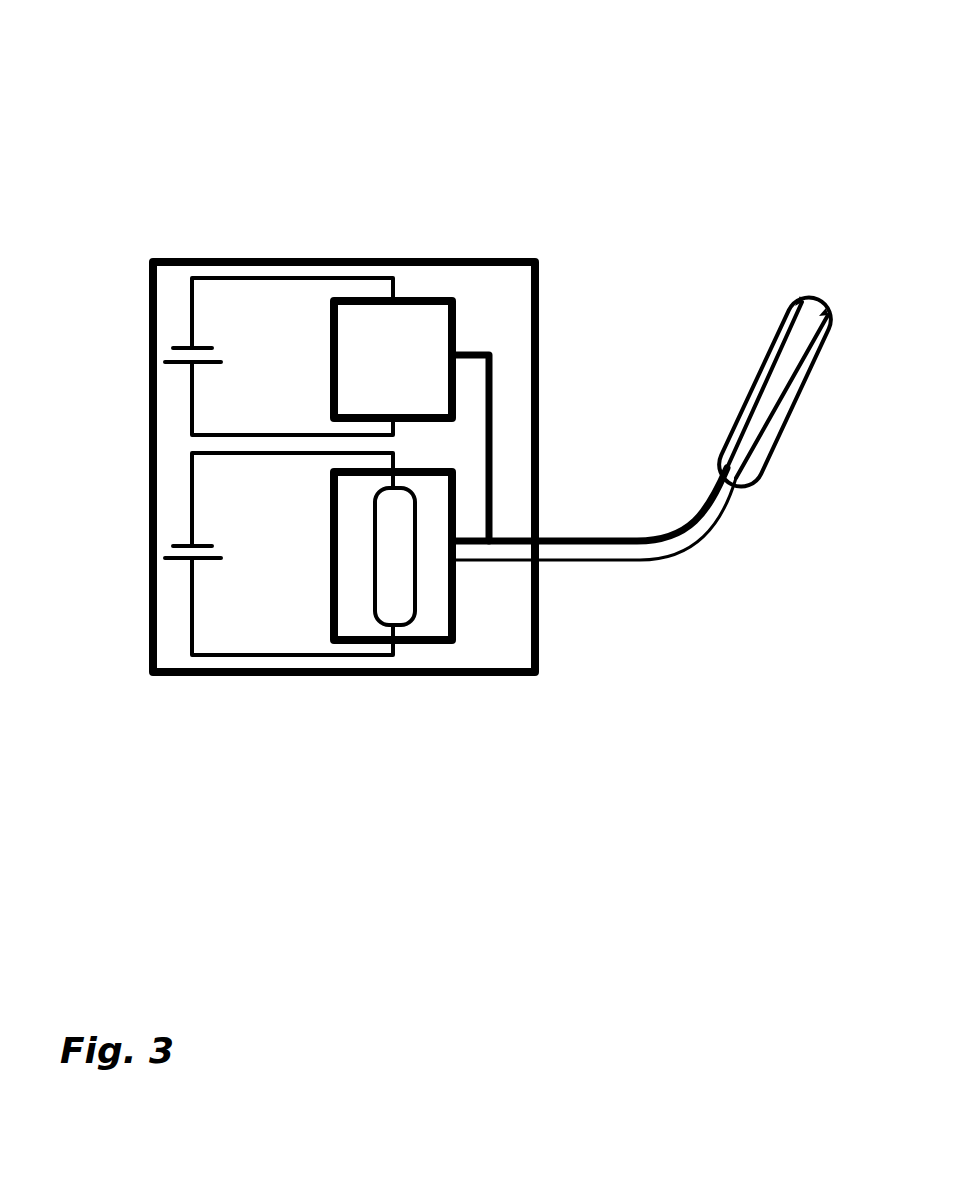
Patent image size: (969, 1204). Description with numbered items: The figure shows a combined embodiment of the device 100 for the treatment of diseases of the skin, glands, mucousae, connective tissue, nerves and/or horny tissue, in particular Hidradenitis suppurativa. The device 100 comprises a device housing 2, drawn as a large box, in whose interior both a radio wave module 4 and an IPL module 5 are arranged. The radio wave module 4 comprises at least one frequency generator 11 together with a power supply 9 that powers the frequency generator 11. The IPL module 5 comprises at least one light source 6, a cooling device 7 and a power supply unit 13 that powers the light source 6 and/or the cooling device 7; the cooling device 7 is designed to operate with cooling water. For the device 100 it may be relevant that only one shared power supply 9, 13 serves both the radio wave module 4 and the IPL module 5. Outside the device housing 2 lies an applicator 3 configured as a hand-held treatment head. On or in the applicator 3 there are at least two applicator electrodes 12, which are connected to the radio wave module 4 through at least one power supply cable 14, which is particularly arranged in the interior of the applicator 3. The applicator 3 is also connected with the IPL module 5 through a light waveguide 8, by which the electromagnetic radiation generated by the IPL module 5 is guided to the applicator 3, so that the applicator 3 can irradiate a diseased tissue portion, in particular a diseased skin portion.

The device 100 is at (313, 120).
The device housing 2 is at (537, 673).
The applicator 3 is at (757, 467).
The radio wave module 4 is at (412, 294).
The IPL module 5 is at (422, 648).
The light source 6 is at (395, 597).
The cooling device 7 is at (453, 640).
The light waveguide 8 is at (617, 560).
The power supply 9 is at (191, 345).
The frequency generator 11 is at (428, 360).
The applicator electrodes 12 is at (830, 315).
The power supply unit 13 is at (190, 597).
The power supply cable 14 is at (760, 392).